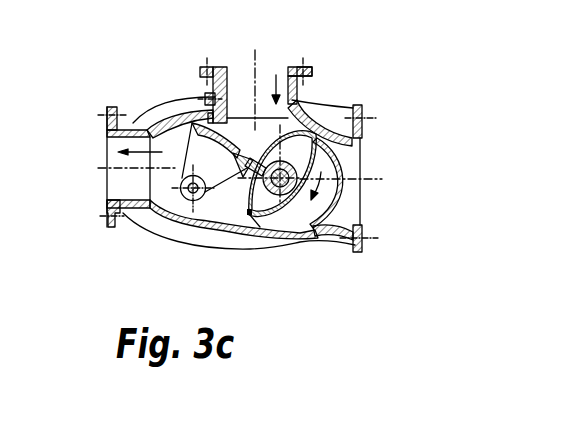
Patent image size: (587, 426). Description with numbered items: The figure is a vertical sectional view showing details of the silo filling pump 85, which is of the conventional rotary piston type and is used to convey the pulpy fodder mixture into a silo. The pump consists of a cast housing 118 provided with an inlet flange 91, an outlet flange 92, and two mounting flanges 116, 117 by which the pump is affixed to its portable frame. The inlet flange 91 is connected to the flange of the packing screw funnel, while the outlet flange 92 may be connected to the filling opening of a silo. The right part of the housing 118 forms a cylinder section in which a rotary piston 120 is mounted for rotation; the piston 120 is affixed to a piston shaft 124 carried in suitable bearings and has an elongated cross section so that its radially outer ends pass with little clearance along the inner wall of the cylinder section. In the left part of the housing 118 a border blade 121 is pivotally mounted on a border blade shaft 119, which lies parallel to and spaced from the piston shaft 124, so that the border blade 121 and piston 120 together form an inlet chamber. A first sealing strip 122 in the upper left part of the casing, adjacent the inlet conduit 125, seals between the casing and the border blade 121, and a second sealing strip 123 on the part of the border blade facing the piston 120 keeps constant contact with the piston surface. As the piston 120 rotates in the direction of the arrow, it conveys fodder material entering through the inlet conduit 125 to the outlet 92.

The silo filling pump 85 is at (217, 252).
The inlet flange 91 is at (295, 67).
The outlet flange 92 is at (107, 129).
The mounting flange 116 is at (362, 228).
The mounting flange 117 is at (362, 108).
The cast housing 118 is at (197, 153).
The border blade shaft 119 is at (192, 201).
The rotary piston 120 is at (282, 200).
The border blade 121 is at (135, 125).
The first sealing strip 122 is at (196, 112).
The second sealing strip 123 is at (262, 135).
The piston shaft 124 is at (298, 203).
The inlet conduit 125 is at (245, 115).